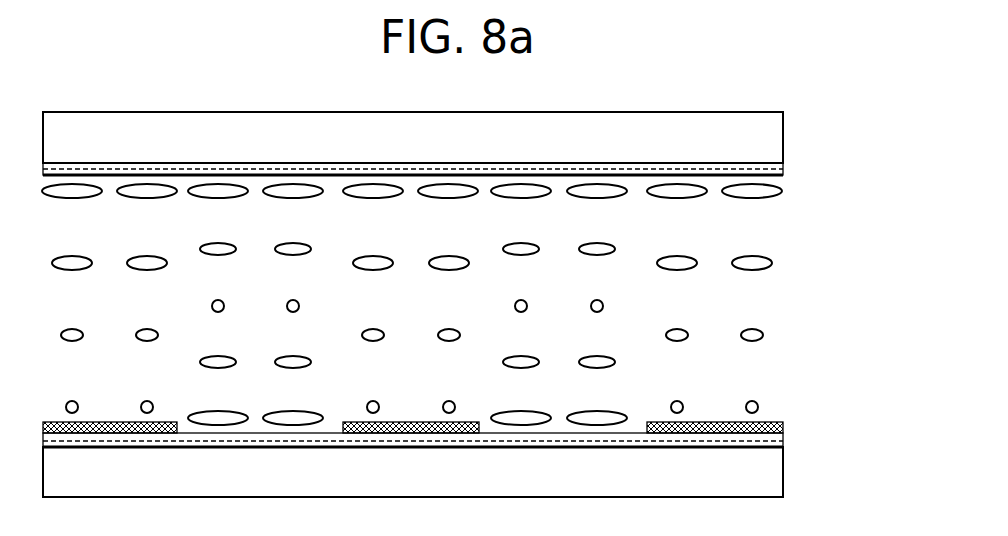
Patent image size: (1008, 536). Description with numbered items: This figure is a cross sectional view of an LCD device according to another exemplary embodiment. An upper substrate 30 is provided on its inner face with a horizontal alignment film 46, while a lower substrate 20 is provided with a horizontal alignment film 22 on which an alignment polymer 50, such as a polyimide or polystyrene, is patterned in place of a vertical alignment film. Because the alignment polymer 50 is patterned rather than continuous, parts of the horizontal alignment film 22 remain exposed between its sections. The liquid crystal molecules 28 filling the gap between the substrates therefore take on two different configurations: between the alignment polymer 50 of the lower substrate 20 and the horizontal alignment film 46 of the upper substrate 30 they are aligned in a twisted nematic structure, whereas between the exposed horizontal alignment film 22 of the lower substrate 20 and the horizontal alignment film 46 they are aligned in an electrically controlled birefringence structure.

The upper substrate 30 is at (783, 138).
The horizontal alignment film 46 is at (783, 170).
The liquid crystal molecules 28 is at (773, 263).
The alignment polymer 50 is at (783, 428).
The horizontal alignment film 22 is at (783, 440).
The lower substrate 20 is at (779, 471).